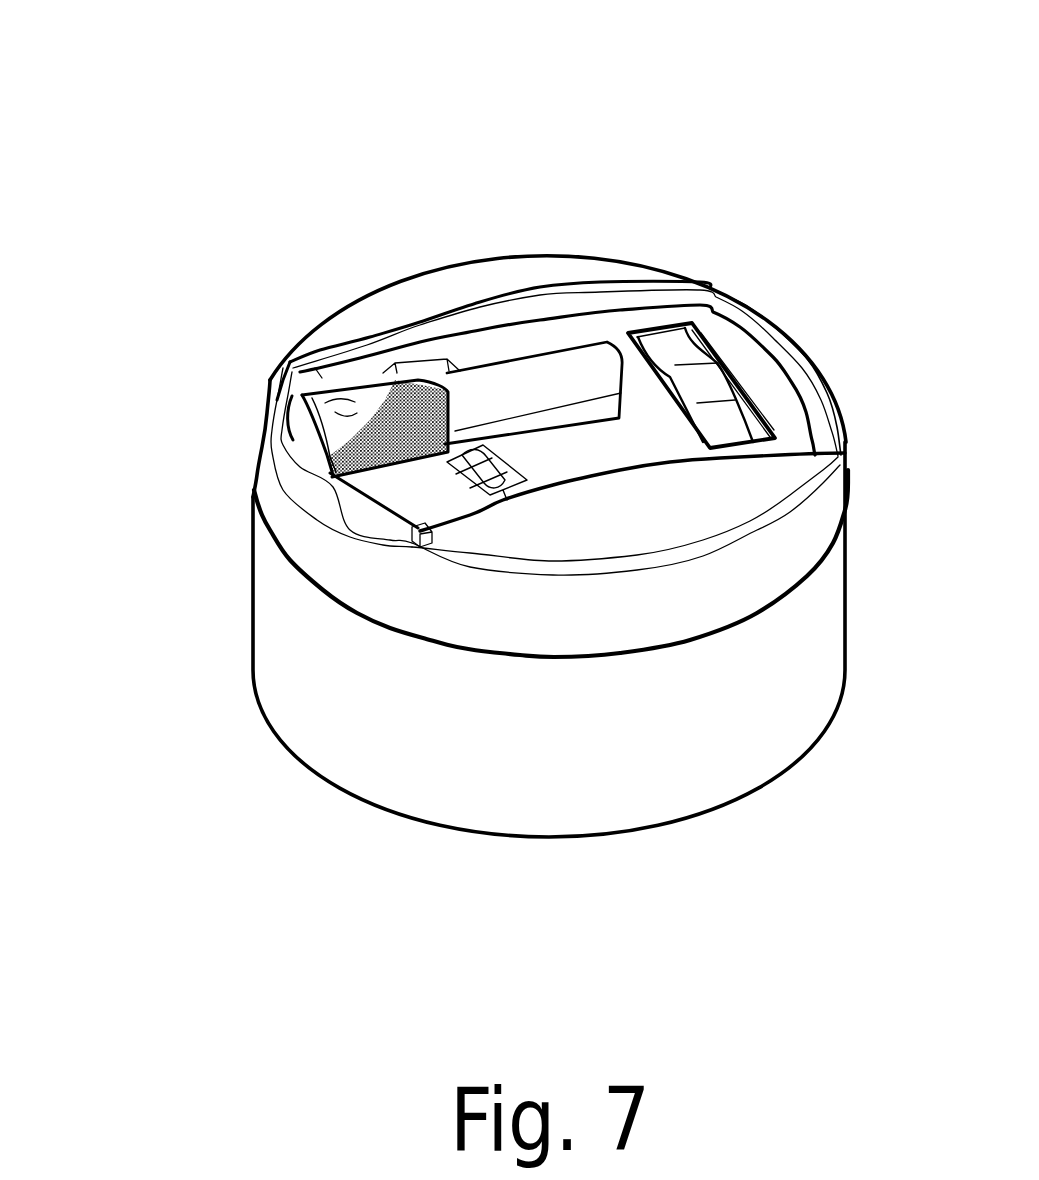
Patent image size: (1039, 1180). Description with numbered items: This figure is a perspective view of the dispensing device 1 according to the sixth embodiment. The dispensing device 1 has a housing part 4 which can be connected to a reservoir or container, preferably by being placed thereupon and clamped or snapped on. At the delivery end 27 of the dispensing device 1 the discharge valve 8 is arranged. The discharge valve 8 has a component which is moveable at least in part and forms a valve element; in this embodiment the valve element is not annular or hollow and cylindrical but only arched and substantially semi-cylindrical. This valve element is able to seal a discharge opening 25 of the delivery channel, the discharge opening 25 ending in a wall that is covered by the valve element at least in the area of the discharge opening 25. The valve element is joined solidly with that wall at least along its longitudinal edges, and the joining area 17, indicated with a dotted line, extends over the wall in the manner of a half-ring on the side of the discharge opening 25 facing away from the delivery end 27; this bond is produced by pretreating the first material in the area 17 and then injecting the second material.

The dispensing device 1 is at (752, 237).
The housing part 4 is at (318, 733).
The discharge valve 8 is at (417, 382).
The joining area 17 is at (327, 473).
The discharge opening 25 is at (272, 343).
The delivery end 27 is at (298, 403).